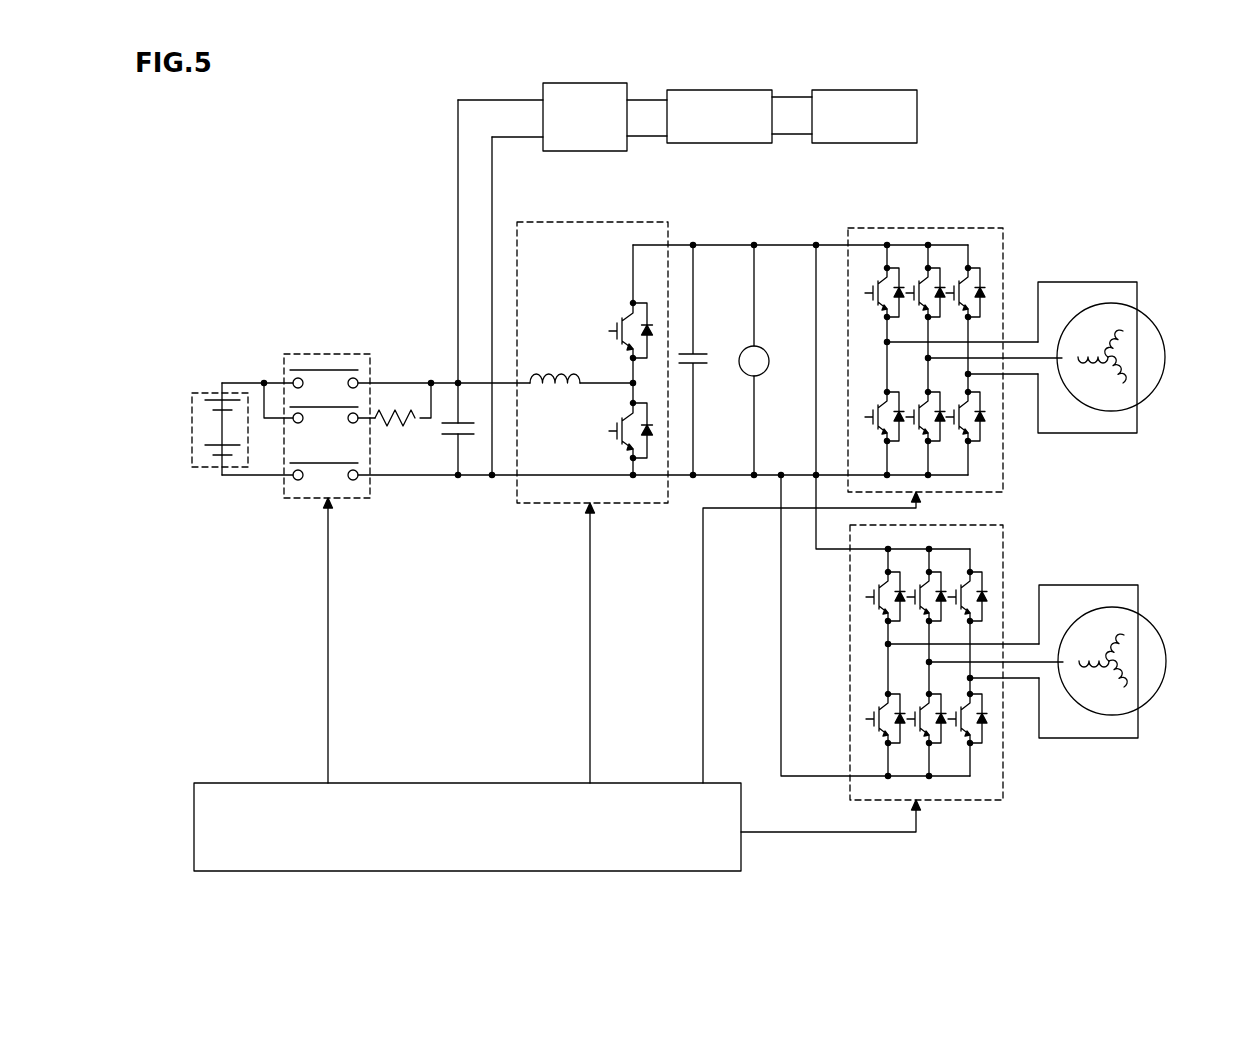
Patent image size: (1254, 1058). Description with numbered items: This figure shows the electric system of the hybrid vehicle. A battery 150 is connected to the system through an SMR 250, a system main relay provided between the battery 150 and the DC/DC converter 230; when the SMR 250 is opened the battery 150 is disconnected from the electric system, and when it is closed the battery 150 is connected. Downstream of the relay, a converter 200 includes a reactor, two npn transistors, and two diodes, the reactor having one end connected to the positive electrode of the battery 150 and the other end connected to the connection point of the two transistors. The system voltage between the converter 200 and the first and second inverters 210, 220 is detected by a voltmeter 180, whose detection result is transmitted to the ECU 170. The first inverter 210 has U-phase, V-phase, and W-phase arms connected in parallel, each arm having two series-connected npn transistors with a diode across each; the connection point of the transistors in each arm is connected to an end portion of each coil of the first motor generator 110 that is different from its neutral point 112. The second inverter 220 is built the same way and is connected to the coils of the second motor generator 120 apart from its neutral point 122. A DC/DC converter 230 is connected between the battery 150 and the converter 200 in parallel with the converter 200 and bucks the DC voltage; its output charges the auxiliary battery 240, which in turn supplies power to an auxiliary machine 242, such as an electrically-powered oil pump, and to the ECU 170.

The first motor generator 110 is at (1133, 338).
The neutral point 112 is at (1108, 355).
The second motor generator 120 is at (1133, 642).
The neutral point 122 is at (1108, 658).
The battery 150 is at (205, 392).
The ECU 170 is at (507, 782).
The voltmeter 180 is at (765, 375).
The converter 200 is at (572, 222).
The first inverter 210 is at (1003, 445).
The second inverter 220 is at (1003, 748).
The DC/DC converter 230 is at (583, 152).
The auxiliary battery 240 is at (717, 144).
The auxiliary machine 242 is at (862, 144).
The SMR (System Main Relay) 250 is at (325, 354).